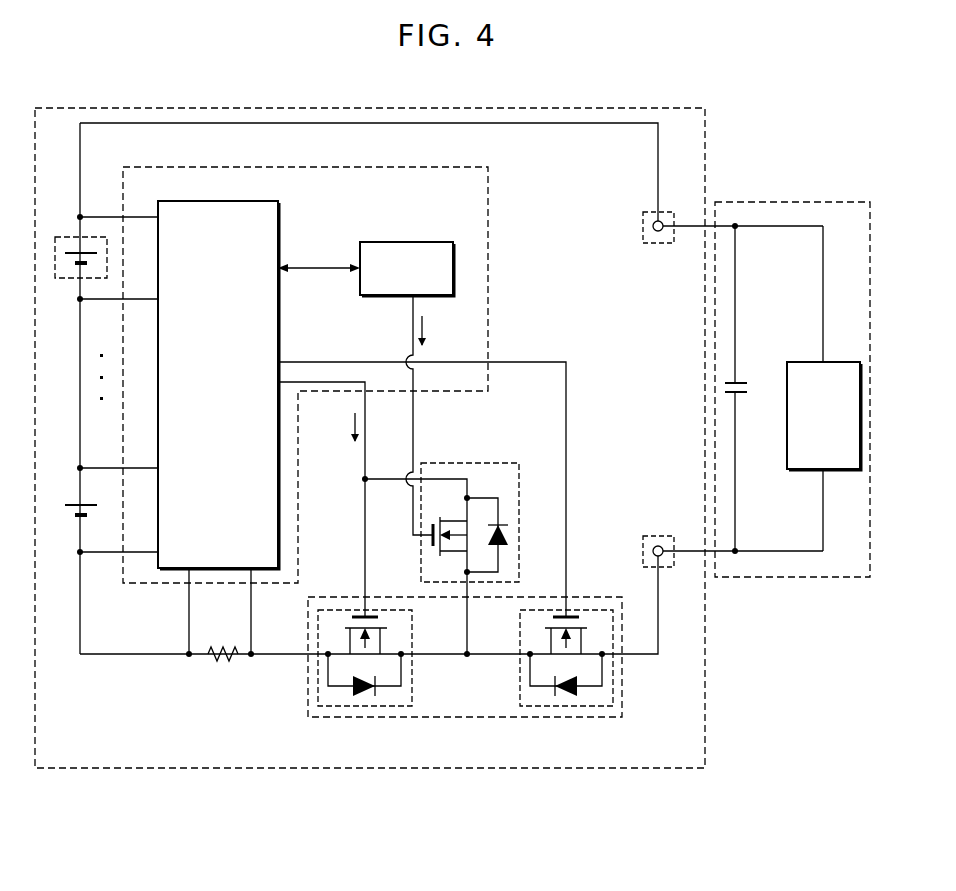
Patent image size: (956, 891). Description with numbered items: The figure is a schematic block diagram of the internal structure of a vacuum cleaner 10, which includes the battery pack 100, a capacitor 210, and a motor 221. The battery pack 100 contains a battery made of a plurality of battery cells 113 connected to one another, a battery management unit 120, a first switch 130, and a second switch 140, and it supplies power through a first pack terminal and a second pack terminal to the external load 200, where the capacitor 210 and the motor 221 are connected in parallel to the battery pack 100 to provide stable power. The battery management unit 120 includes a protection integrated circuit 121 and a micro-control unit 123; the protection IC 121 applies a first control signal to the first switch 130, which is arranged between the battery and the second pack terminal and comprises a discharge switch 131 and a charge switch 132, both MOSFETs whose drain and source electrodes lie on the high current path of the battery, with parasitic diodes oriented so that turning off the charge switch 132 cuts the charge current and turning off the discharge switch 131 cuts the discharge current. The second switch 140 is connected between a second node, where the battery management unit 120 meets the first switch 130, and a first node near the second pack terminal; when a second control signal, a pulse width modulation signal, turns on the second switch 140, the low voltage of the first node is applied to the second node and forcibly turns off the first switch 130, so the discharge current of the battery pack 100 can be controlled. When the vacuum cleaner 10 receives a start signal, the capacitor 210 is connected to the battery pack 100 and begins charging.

The vacuum cleaner 10 is at (770, 118).
The battery pack 100 is at (546, 108).
The battery cell 113 is at (67, 280).
The battery management unit 120 is at (488, 191).
The protection integrated circuit 121 is at (211, 201).
The micro-control unit 123 is at (414, 242).
The first switch 130 is at (598, 597).
The discharge switch 131 is at (375, 706).
The charge switch 132 is at (583, 706).
The second switch 140 is at (490, 463).
The external load 200 is at (775, 202).
The capacitor 210 is at (748, 395).
The motor 221 is at (798, 362).